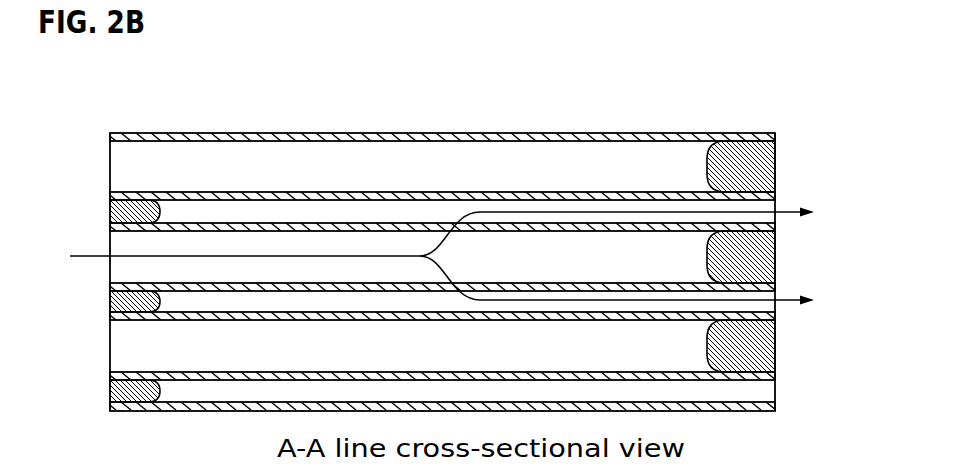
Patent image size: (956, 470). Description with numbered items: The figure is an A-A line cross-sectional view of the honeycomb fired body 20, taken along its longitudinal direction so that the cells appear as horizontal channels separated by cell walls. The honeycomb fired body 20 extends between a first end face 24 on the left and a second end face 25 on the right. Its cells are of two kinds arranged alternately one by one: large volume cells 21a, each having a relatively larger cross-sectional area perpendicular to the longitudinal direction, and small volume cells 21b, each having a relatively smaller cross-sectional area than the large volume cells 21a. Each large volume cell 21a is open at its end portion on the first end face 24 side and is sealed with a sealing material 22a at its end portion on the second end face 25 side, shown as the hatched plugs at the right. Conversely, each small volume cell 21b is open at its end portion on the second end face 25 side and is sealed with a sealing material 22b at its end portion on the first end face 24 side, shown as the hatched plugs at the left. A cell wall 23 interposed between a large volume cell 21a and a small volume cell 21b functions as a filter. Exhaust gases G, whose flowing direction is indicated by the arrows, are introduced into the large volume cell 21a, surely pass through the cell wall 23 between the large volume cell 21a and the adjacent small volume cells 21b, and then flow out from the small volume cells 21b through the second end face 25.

The honeycomb fired body 20 is at (338, 113).
The large volume cell 21a is at (130, 161).
The small volume cell 21b is at (768, 218).
The sealing material 22a is at (765, 165).
The sealing material 22b is at (118, 207).
The cell wall 23 is at (436, 197).
The first end face 24 is at (110, 312).
The second end face 25 is at (775, 271).
The exhaust gases G is at (433, 256).